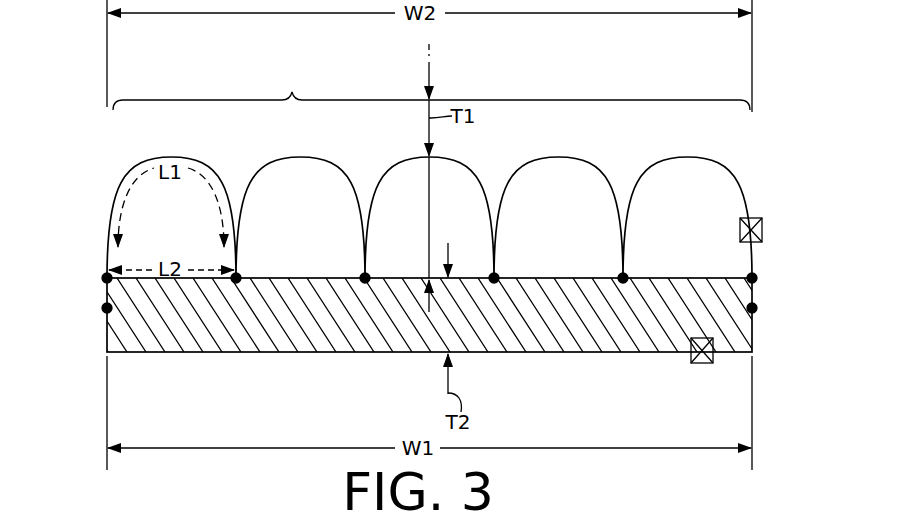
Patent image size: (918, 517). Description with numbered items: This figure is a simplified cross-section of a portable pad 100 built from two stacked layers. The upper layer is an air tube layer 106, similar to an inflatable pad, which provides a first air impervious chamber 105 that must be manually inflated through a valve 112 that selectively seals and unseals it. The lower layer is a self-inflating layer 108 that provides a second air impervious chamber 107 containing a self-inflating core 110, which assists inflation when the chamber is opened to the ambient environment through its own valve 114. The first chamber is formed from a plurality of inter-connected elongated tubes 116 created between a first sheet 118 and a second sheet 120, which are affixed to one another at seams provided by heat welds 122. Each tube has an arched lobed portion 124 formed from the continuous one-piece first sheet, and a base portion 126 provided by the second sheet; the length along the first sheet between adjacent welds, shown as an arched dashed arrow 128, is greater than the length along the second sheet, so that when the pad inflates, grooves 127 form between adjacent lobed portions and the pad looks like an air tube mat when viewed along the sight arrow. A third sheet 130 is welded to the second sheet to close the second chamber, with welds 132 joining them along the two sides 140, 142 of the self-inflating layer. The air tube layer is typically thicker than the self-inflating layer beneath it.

The pad 100 is at (589, 96).
The first air impervious chamber 105 is at (431, 87).
The air tube layer 106 is at (111, 188).
The second air impervious chamber 107 is at (252, 354).
The self-inflating layer 108 is at (87, 328).
The self-inflating core 110 is at (405, 335).
The valve 112 is at (764, 228).
The valve 114 is at (702, 363).
The elongated tubes 116 is at (185, 158).
The first sheet 118 is at (206, 172).
The second sheet 120 is at (245, 284).
The welds 122 is at (105, 277).
The lobed portion 124 is at (148, 159).
The base portion 126 is at (146, 277).
The grooves 127 is at (235, 206).
The sight arrow 128 is at (429, 58).
The third sheet 130 is at (527, 354).
The welds 132 is at (105, 308).
The side 140 is at (106, 350).
The side 142 is at (754, 343).